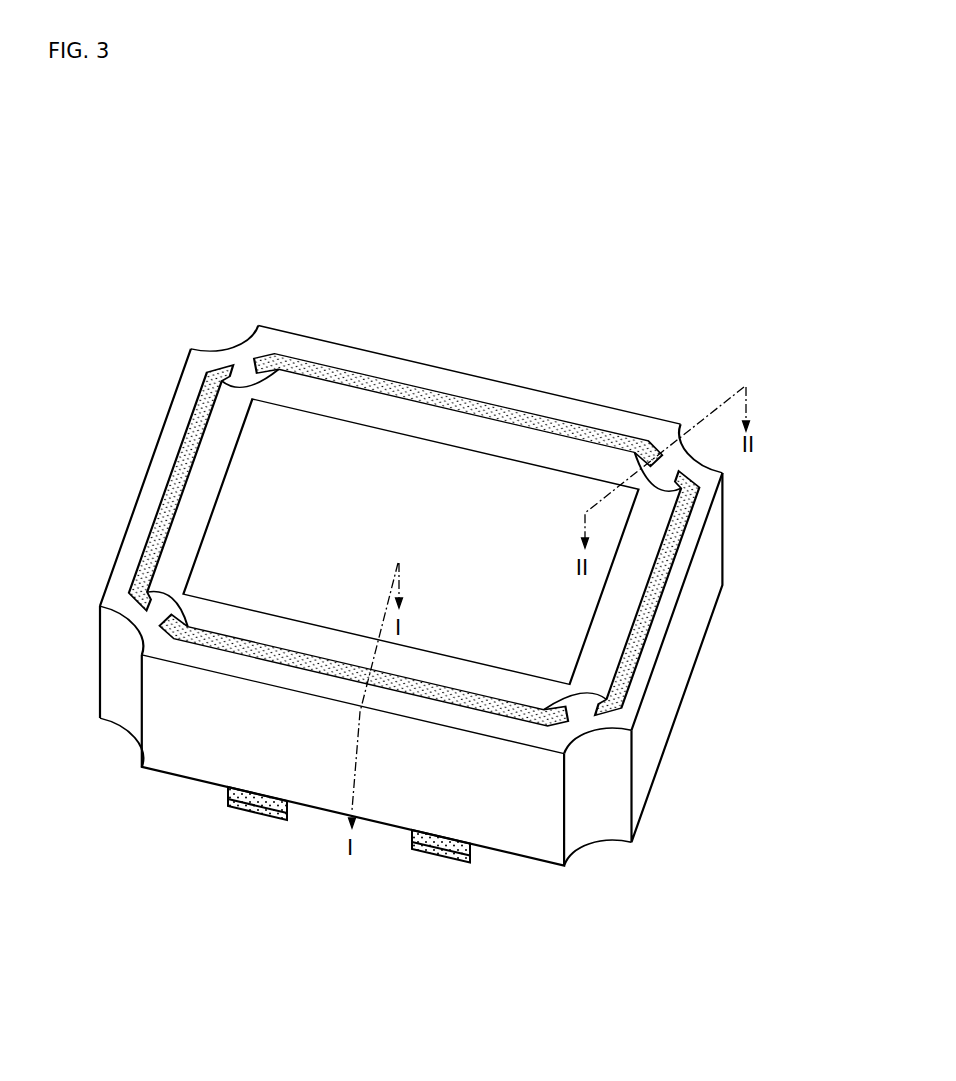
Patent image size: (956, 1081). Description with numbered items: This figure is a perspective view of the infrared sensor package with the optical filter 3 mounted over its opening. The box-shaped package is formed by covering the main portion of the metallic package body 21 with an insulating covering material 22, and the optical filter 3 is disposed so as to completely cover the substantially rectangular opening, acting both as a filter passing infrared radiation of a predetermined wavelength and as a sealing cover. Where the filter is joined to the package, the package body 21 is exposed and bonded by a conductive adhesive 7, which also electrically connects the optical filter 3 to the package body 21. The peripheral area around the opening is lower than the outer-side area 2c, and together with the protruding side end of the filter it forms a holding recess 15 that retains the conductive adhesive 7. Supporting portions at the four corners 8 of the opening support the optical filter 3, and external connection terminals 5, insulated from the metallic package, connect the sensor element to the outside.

The outer-side area 2c is at (212, 365).
The optical filter 3 is at (345, 431).
The external connection terminals 5 is at (267, 812).
The conductive adhesive 7 is at (543, 447).
The corners 8 is at (257, 412).
The holding recess 15 is at (467, 433).
The metallic package body 21 is at (692, 500).
The insulating covering material 22 is at (645, 767).